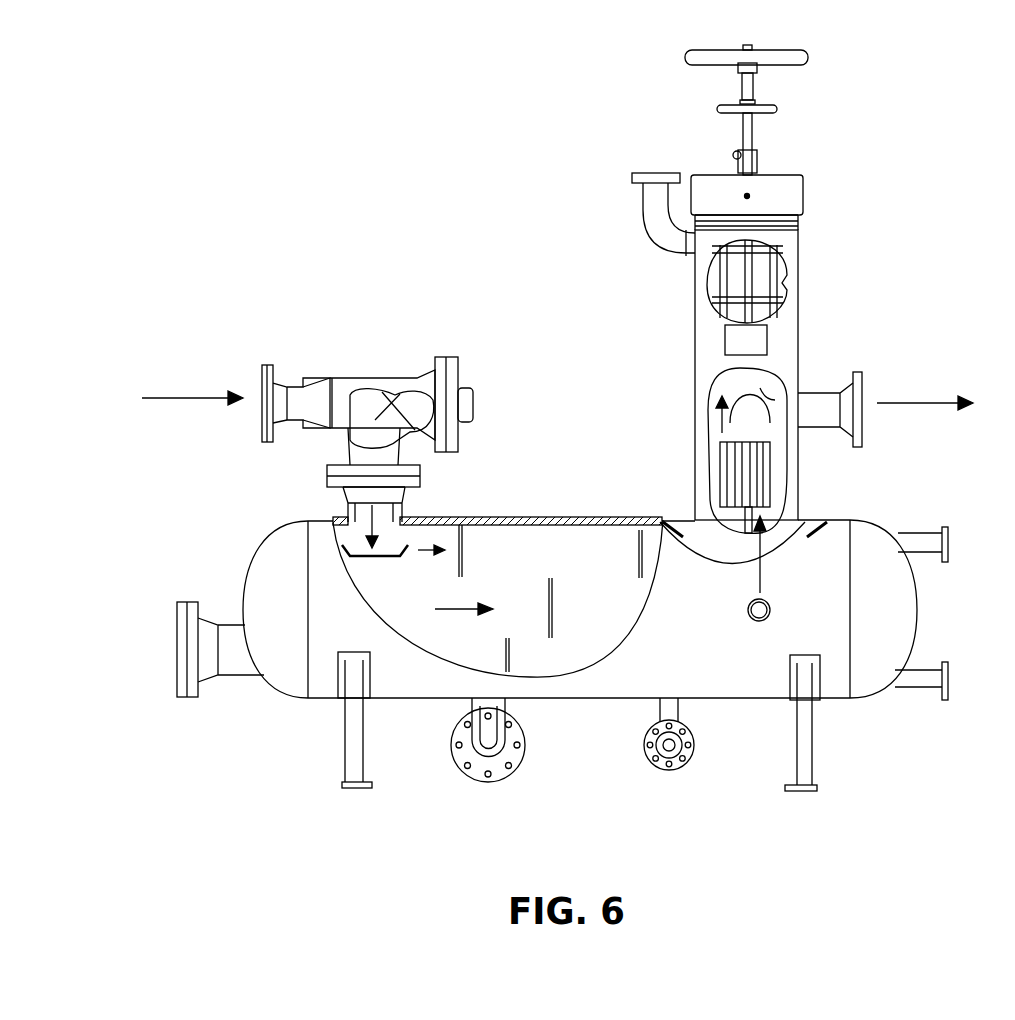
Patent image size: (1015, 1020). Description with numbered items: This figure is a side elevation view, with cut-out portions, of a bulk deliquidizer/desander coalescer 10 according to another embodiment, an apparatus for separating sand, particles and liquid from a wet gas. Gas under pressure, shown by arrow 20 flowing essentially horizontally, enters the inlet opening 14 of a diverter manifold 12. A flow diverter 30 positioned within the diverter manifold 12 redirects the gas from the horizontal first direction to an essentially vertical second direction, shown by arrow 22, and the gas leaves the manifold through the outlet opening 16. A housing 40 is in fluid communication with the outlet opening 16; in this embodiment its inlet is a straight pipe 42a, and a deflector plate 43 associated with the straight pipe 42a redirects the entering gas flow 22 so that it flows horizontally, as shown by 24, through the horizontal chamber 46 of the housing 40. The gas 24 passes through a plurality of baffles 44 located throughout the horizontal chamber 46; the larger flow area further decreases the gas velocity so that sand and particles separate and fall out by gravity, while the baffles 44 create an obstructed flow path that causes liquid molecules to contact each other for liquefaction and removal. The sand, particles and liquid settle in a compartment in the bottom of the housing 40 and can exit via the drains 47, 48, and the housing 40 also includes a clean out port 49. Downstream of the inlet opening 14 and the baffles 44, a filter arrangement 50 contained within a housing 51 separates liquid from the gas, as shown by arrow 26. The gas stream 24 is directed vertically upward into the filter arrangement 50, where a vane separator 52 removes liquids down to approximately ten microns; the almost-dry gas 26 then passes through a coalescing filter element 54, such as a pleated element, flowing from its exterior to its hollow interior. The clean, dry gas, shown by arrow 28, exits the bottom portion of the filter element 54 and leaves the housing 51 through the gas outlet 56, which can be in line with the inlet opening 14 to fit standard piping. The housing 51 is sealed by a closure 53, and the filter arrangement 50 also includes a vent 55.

The bulk deliquidizer/desander coalescer 10 is at (160, 312).
The diverter manifold 12 is at (331, 385).
The inlet opening 14 is at (265, 380).
The outlet opening 16 is at (420, 475).
The arrow showing gas flow 20 is at (228, 395).
The arrow showing gas flow 22 is at (335, 518).
The gas flow 24 is at (418, 551).
The arrow showing liquid separation / almost-dry gas 26 is at (718, 418).
The arrow showing clean dry gas 28 is at (945, 405).
The flow diverter 30 is at (358, 415).
The housing 40 is at (585, 520).
The straight pipe 42a is at (400, 512).
The deflector plate 43 is at (372, 558).
The baffles 44 is at (553, 610).
The horizontal chamber 46 is at (498, 598).
The drain 47 is at (466, 768).
The drain 48 is at (686, 757).
The clean out port 49 is at (180, 650).
The filter arrangement 50 is at (604, 300).
The housing 51 is at (703, 350).
The vane separator 52 is at (740, 470).
The closure 53 is at (815, 128).
The coalescing filter element 54 is at (765, 275).
The vent 55 is at (655, 178).
The gas outlet 56 is at (845, 392).